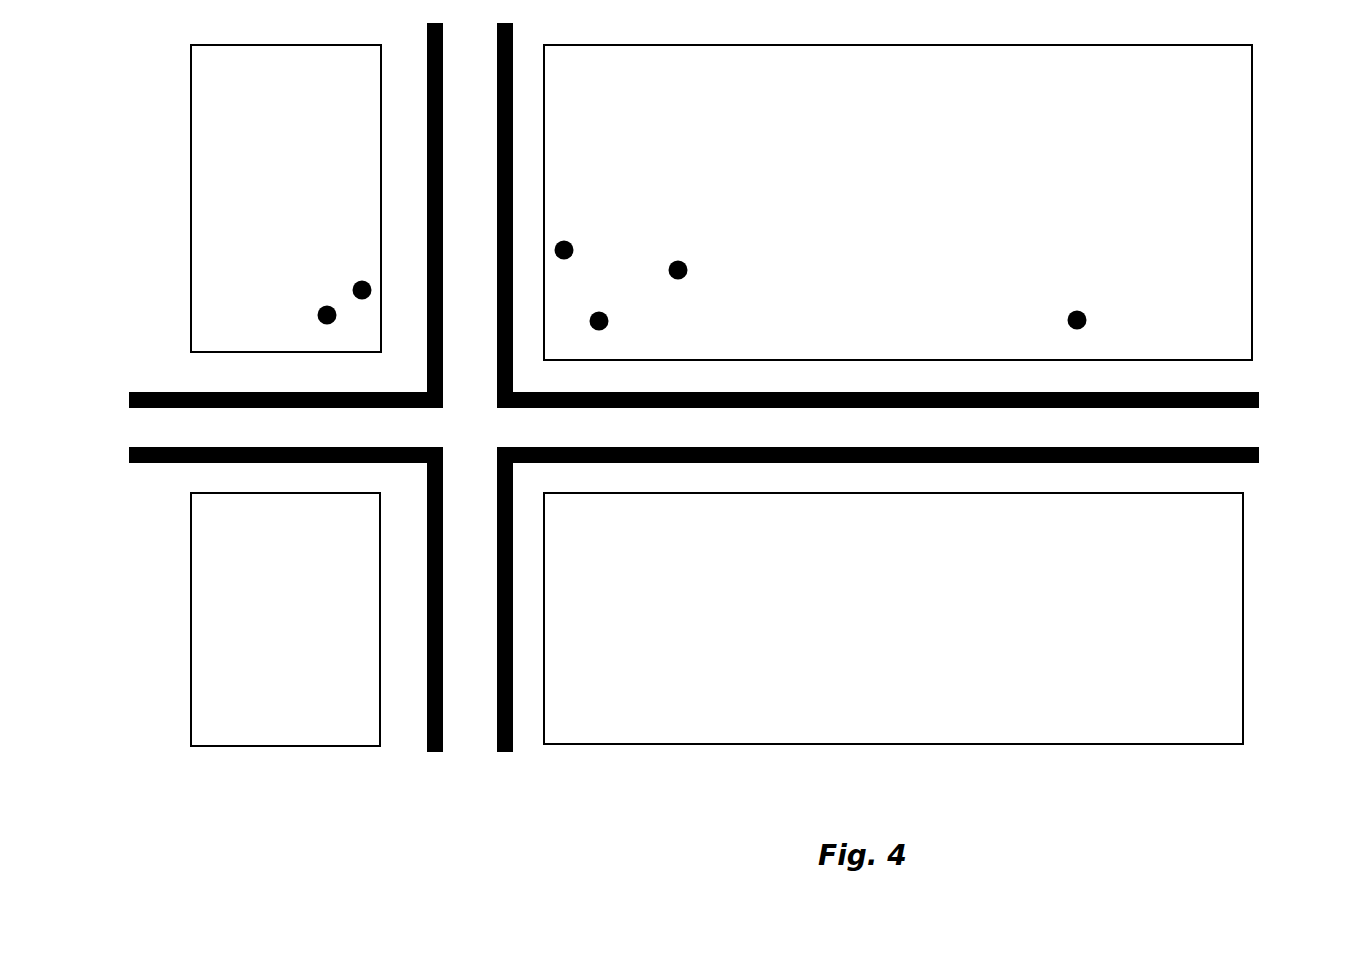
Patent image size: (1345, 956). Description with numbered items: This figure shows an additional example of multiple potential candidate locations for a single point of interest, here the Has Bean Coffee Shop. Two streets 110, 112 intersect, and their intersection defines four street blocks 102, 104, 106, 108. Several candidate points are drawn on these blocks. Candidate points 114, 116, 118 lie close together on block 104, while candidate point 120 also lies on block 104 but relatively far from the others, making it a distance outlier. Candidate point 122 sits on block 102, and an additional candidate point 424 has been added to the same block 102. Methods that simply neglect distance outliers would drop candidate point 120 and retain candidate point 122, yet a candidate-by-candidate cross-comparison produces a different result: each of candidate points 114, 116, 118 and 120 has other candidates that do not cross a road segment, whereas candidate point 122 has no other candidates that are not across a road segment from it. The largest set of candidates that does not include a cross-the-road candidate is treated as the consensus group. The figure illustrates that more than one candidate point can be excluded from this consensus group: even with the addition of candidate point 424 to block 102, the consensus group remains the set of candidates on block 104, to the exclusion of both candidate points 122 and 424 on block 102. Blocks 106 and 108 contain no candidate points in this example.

The street block 102 is at (286, 198).
The street block 104 is at (898, 202).
The street block 106 is at (285, 619).
The street block 108 is at (893, 618).
The street 110 is at (1243, 423).
The street 112 is at (490, 551).
The candidate point 114 is at (572, 239).
The candidate point 116 is at (694, 261).
The candidate point 118 is at (622, 323).
The candidate point 120 is at (1093, 317).
The candidate point 122 is at (357, 280).
The candidate point 424 is at (317, 321).